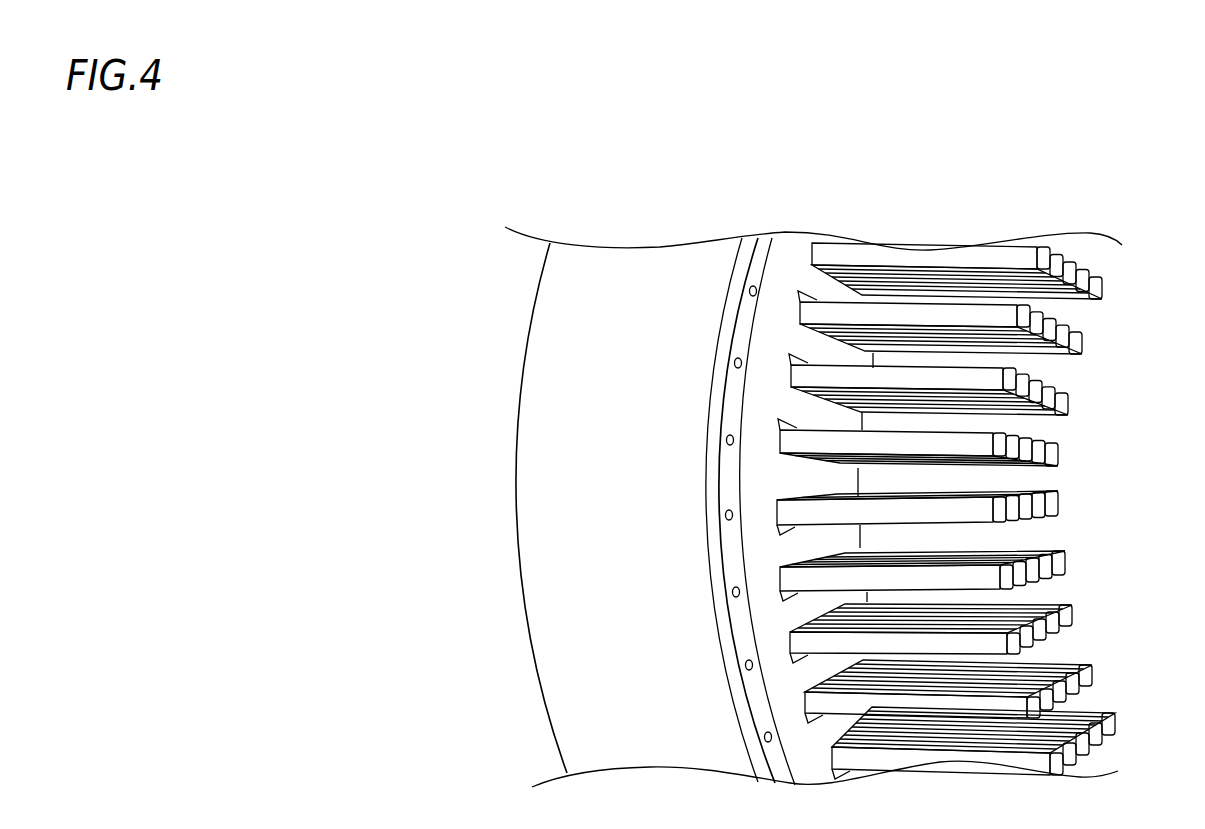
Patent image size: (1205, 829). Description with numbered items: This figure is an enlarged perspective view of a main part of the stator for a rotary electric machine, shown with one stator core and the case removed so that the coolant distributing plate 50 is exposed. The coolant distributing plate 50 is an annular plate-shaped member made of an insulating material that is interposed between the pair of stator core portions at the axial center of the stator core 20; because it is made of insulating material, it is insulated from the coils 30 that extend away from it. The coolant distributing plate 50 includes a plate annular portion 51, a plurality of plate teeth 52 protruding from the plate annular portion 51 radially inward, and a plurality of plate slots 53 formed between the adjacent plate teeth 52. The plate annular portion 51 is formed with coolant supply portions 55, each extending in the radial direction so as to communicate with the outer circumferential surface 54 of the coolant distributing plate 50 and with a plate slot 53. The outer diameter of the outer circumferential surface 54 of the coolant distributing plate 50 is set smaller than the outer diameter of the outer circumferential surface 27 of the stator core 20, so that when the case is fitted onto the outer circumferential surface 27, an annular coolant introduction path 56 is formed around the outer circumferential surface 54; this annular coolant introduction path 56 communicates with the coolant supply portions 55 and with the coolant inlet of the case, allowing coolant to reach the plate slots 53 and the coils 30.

The stator core 20 is at (516, 497).
The outer circumferential surface of the stator core 27 is at (580, 633).
The coils 30 is at (977, 580).
The coolant distributing plate 50 is at (739, 493).
The plate annular portion 51 is at (755, 412).
The plate teeth 52 is at (800, 479).
The plate slots 53 is at (795, 380).
The outer circumferential surface of the coolant distributing plate 54 is at (745, 325).
The coolant supply portion 55 is at (749, 290).
The annular coolant introduction path 56 is at (767, 243).